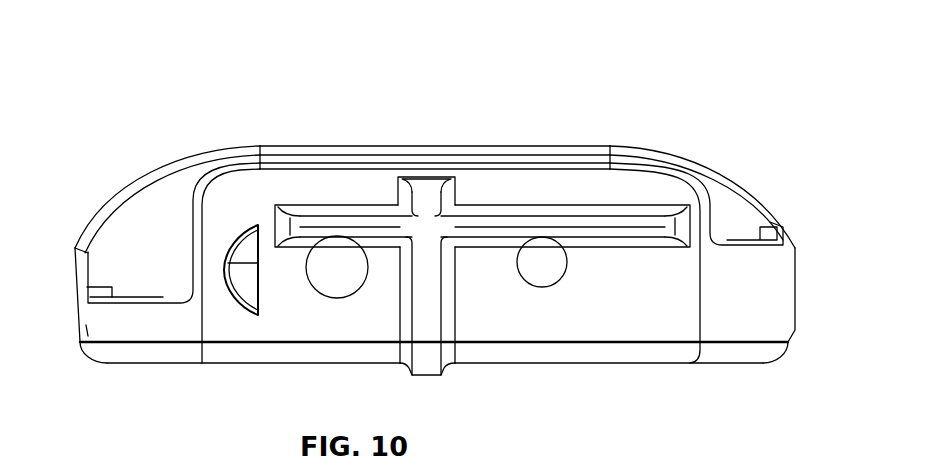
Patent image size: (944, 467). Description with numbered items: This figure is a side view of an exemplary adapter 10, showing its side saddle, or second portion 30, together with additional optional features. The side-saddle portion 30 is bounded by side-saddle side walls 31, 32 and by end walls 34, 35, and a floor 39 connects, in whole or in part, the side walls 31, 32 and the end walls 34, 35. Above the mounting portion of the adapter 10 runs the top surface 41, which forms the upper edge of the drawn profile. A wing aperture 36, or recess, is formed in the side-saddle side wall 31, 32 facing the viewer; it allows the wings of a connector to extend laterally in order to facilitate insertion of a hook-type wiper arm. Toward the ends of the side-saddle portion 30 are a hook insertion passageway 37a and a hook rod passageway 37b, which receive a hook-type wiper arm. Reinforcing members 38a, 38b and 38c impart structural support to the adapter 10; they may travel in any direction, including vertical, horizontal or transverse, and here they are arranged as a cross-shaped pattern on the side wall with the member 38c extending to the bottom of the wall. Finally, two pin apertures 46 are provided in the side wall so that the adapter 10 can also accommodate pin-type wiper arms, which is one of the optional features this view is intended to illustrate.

The adapter 10 is at (267, 105).
The side-saddle portion 30 is at (120, 270).
The side-saddle side wall 31 is at (633, 313).
The side-saddle side wall 32 is at (155, 248).
The end wall 34 is at (80, 343).
The end wall 35 is at (793, 307).
The wing aperture 36 is at (256, 315).
The hook insertion passageway 37a is at (86, 243).
The hook rod passageway 37b is at (733, 227).
The reinforcing member 38a is at (432, 270).
The reinforcing member 38b is at (593, 228).
The reinforcing member 38c is at (428, 372).
The floor 39 is at (178, 363).
The top surface 41 is at (412, 145).
The pin aperture 46 is at (537, 260).